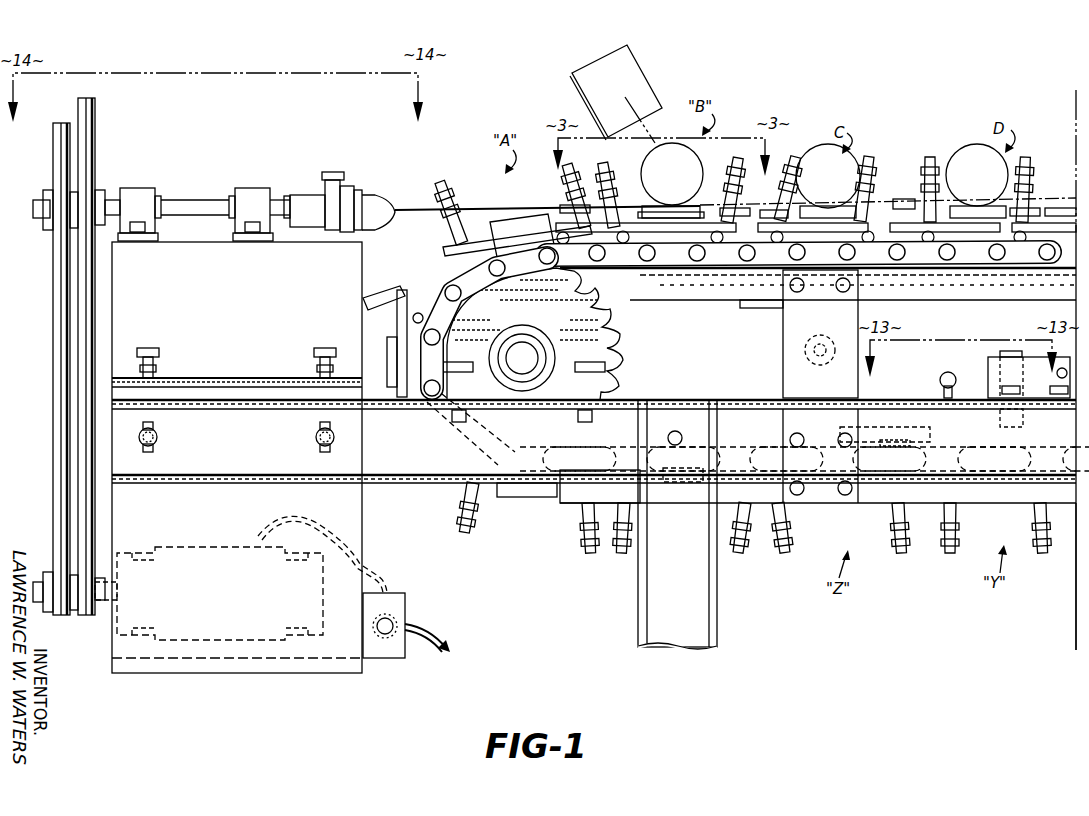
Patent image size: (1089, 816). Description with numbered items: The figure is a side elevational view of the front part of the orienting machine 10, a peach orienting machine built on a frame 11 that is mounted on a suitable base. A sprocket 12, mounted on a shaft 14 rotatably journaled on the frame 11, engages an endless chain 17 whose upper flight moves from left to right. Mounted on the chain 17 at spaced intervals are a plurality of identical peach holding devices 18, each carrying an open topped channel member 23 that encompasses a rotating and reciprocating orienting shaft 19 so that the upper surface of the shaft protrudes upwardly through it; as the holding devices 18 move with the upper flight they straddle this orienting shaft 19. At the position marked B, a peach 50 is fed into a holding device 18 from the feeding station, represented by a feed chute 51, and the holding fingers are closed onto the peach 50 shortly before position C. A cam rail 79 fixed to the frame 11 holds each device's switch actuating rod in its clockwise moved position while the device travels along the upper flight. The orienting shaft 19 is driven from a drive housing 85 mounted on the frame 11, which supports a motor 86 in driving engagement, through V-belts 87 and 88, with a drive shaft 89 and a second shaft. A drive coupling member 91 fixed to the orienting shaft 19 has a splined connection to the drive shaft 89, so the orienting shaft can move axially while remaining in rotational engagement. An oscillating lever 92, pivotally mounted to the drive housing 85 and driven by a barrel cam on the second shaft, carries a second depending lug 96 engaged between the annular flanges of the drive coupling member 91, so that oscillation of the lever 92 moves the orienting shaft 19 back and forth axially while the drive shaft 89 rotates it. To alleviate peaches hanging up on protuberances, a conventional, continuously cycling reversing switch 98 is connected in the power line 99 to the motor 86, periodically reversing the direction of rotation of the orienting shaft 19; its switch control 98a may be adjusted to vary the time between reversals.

The orienting machine 10 is at (900, 612).
The frame 11 is at (758, 398).
The sprocket 12 is at (625, 350).
The shaft 14 is at (525, 352).
The endless chain 17 is at (930, 258).
The peach holding device 18 is at (921, 153).
The orienting shaft 19 is at (540, 207).
The open topped channel member 23 is at (667, 208).
The peach 50 is at (702, 178).
The feed chute 51 is at (643, 70).
The cam rail 79 is at (905, 200).
The drive housing 85 is at (372, 577).
The motor 86 is at (197, 630).
The V-belt 87 is at (80, 410).
The V-belt 88 is at (57, 355).
The drive shaft 89 is at (210, 200).
The drive coupling member 91 is at (301, 194).
The oscillating lever 92 is at (337, 187).
The second depending lug 96 is at (367, 192).
The reversing switch 98 is at (408, 595).
The switch control 98a is at (384, 634).
The power line 99 is at (428, 628).